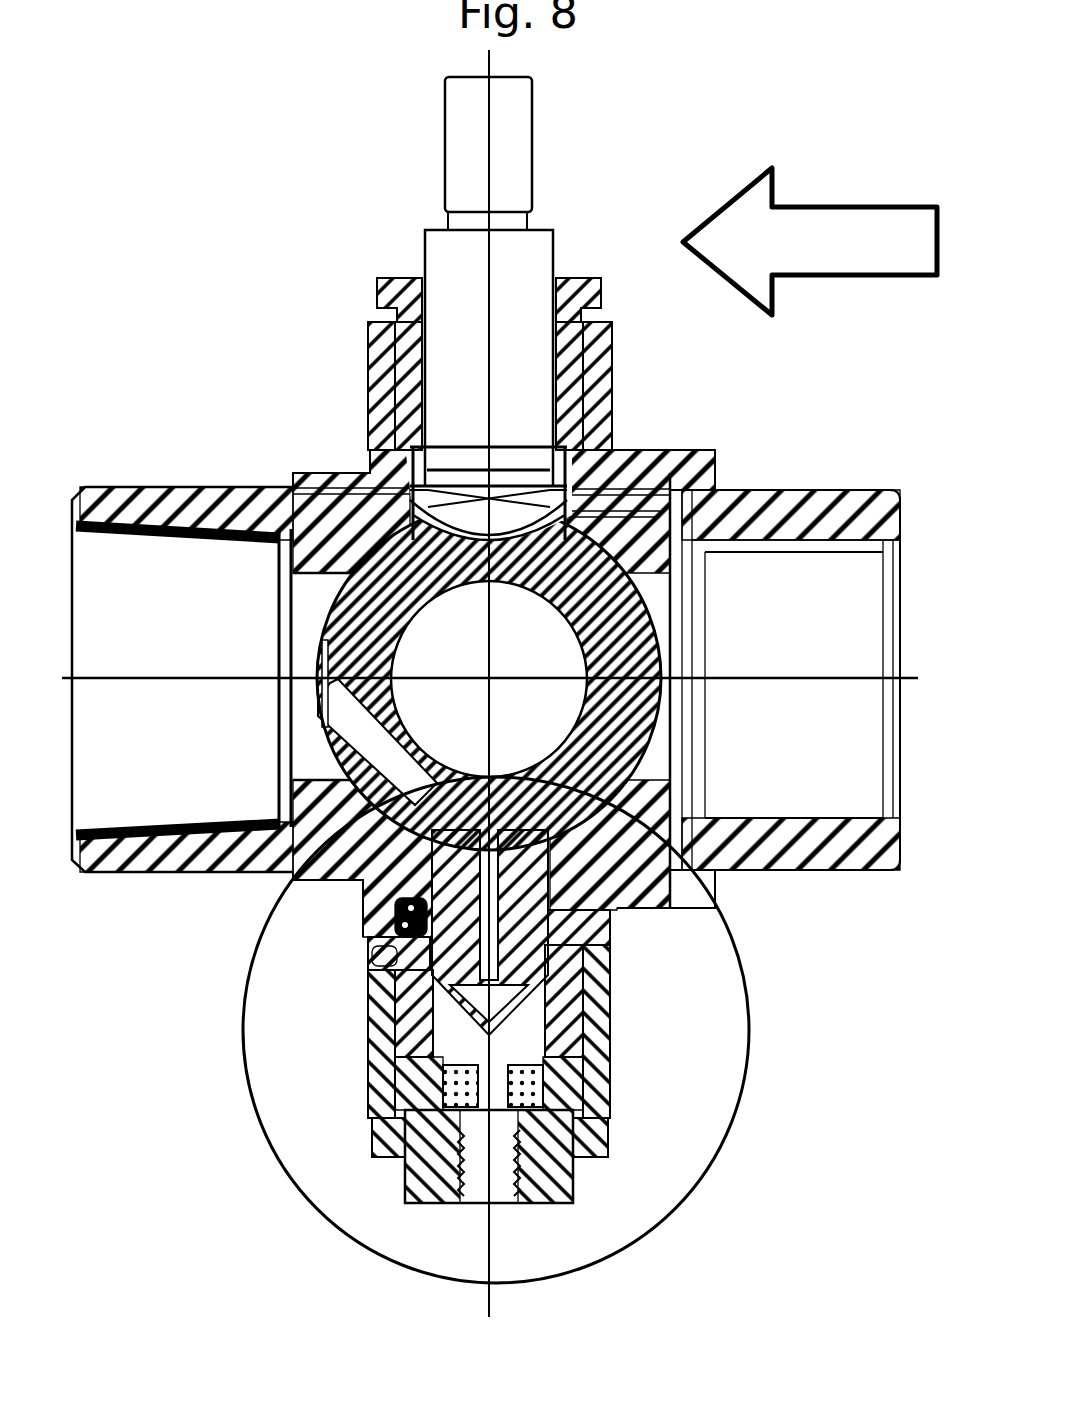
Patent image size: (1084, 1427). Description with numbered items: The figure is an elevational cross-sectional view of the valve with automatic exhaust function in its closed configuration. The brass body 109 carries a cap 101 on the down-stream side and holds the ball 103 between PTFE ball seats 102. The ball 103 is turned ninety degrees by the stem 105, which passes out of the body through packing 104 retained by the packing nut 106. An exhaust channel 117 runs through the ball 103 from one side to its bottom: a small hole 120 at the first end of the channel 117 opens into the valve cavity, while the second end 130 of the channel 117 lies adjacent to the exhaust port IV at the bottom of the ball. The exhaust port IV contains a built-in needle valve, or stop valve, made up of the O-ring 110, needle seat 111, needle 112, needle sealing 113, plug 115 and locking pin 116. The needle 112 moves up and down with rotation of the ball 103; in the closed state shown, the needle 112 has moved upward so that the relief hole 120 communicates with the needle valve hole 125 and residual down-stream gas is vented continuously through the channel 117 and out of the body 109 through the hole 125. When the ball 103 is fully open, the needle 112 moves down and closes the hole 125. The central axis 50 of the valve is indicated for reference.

The valve axis 50 is at (489, 1297).
The cap 101 is at (828, 583).
The ball seats 102 is at (358, 547).
The ball 103 is at (625, 653).
The packing 104 is at (407, 420).
The stem 105 is at (465, 373).
The packing nut 106 is at (383, 280).
The body 109 is at (147, 575).
The O-ring 110 is at (393, 922).
The needle seat 111 is at (567, 957).
The needle 112 is at (543, 980).
The needle sealing 113 is at (610, 1055).
The plug 115 is at (417, 1195).
The locking pin 116 is at (378, 955).
The exhaust channel 117 is at (362, 742).
The small hole 120 is at (320, 697).
The needle valve hole 125 is at (515, 1205).
The second end 130 is at (840, 242).
The exhaust port IV is at (725, 1143).